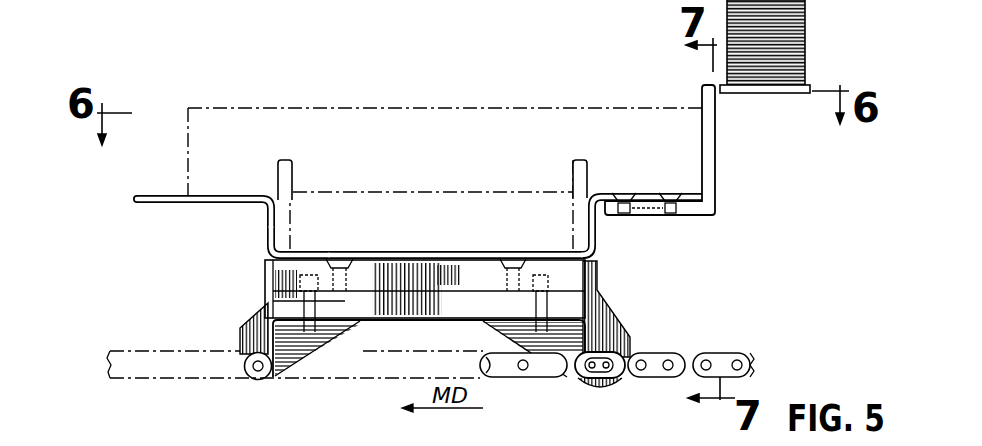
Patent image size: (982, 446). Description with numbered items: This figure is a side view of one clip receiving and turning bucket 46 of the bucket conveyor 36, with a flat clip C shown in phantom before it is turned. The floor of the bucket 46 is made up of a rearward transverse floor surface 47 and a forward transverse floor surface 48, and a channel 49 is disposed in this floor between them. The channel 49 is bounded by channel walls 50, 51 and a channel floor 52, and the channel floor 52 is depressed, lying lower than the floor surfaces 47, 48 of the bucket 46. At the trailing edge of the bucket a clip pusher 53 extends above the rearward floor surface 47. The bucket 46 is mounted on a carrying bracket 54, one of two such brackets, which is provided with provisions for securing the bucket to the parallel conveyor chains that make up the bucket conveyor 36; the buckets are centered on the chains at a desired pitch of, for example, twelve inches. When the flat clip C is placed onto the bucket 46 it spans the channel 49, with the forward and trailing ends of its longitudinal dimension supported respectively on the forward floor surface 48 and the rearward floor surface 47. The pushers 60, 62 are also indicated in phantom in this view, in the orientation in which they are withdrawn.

The bucket conveyor 36 is at (692, 352).
The bucket 46 is at (237, 278).
The rearward transverse floor surface 47 is at (643, 193).
The forward transverse floor surface 48 is at (233, 194).
The channel 49 is at (438, 188).
The channel wall 50 is at (582, 234).
The channel wall 51 is at (275, 222).
The channel floor 52 is at (422, 252).
The clip pusher 53 is at (715, 143).
The carrying bracket 54 is at (605, 313).
The pusher 60 is at (277, 173).
The pusher 62 is at (571, 175).
The clip C is at (421, 108).